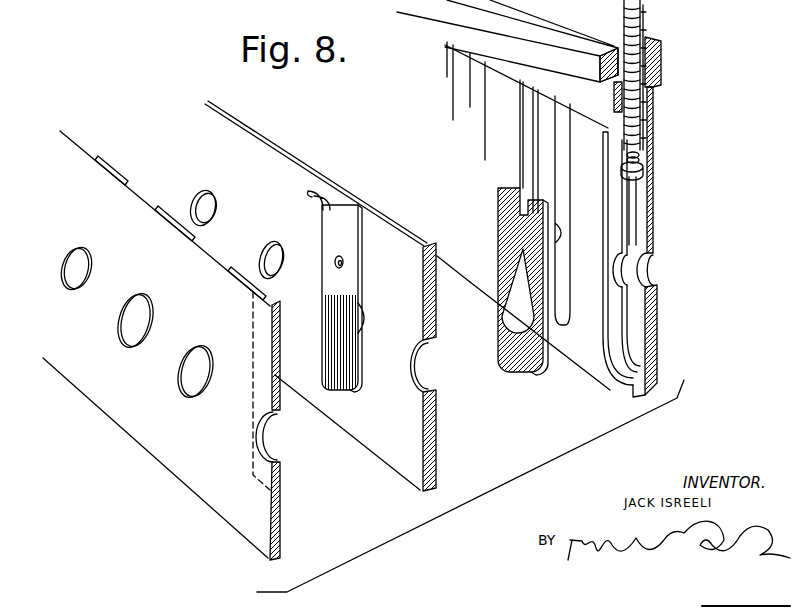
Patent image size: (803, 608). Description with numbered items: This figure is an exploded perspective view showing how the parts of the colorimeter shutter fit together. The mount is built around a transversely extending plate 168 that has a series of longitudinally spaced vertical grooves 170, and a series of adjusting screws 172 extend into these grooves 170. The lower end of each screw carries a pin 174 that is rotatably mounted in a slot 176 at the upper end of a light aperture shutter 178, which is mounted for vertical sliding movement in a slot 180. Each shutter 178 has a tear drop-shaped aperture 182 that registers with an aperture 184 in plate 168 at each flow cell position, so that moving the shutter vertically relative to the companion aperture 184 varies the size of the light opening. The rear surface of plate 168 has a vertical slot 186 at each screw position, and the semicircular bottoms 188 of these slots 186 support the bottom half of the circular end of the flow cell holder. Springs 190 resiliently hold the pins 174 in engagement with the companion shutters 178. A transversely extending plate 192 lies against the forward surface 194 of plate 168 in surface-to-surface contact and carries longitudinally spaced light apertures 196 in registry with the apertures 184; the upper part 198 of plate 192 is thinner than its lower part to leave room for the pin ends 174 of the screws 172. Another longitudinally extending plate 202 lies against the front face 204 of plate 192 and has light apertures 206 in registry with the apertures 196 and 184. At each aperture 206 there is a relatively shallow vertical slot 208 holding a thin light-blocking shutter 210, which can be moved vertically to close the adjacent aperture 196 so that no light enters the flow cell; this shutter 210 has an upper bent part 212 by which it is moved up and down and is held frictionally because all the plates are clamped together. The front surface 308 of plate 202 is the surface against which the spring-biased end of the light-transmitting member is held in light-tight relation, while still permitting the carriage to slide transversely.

The transversely extending plate 168 is at (658, 323).
The vertical groove 170 is at (620, 323).
The adjusting screw 172 is at (645, 28).
The pin 174 is at (641, 173).
The slot 176 is at (516, 215).
The light aperture shutter 178 is at (543, 372).
The slot 180 is at (610, 368).
The tear drop-shaped aperture 182 is at (505, 322).
The aperture 184 is at (643, 262).
The vertical slot 186 is at (661, 97).
The slot bottom 188 is at (647, 287).
The spring 190 is at (642, 156).
The transversely extending plate 192 is at (437, 455).
The forward surface 194 is at (456, 281).
The light aperture 196 is at (422, 364).
The upper part 198 is at (471, 283).
The longitudinally extending plate 202 is at (281, 517).
The front face 204 is at (378, 447).
The light aperture 206 is at (133, 332).
The vertical slot 208 is at (213, 250).
The light-blocking shutter 210 is at (322, 338).
The upper bent part 212 is at (308, 191).
The front surface 308 is at (183, 462).